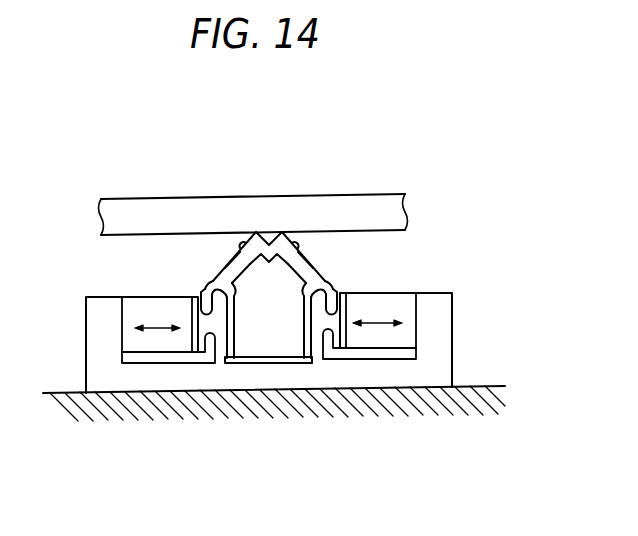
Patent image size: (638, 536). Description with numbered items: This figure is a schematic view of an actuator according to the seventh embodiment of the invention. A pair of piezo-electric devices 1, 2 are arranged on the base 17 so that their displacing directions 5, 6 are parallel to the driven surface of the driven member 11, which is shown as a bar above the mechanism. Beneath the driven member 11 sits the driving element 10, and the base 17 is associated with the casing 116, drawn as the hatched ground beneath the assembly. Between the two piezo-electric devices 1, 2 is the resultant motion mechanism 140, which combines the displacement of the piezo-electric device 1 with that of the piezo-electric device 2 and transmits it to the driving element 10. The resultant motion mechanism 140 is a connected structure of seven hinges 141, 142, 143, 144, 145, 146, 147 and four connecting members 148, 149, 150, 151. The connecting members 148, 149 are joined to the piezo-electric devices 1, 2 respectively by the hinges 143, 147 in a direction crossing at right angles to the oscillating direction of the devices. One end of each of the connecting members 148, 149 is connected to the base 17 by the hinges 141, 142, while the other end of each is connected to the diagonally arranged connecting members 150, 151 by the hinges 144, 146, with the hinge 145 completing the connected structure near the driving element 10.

The piezo-electric device 1 is at (132, 308).
The piezo-electric device 2 is at (409, 300).
The displacing direction 5 is at (157, 328).
The displacing direction 6 is at (385, 312).
The driving element 10 is at (274, 302).
The driven member 11 is at (360, 198).
The base 17 is at (445, 360).
The casing 116 is at (487, 387).
The resultant motion mechanism 140 is at (240, 240).
The hinge 141 is at (232, 360).
The hinge 142 is at (303, 362).
The hinge 143 is at (205, 290).
The hinge 144 is at (212, 288).
The hinge 145 is at (275, 263).
The hinge 146 is at (325, 285).
The hinge 147 is at (329, 308).
The connecting member 148 is at (233, 325).
The connecting member 149 is at (305, 332).
The connecting member 150 is at (227, 262).
The connecting member 151 is at (302, 240).